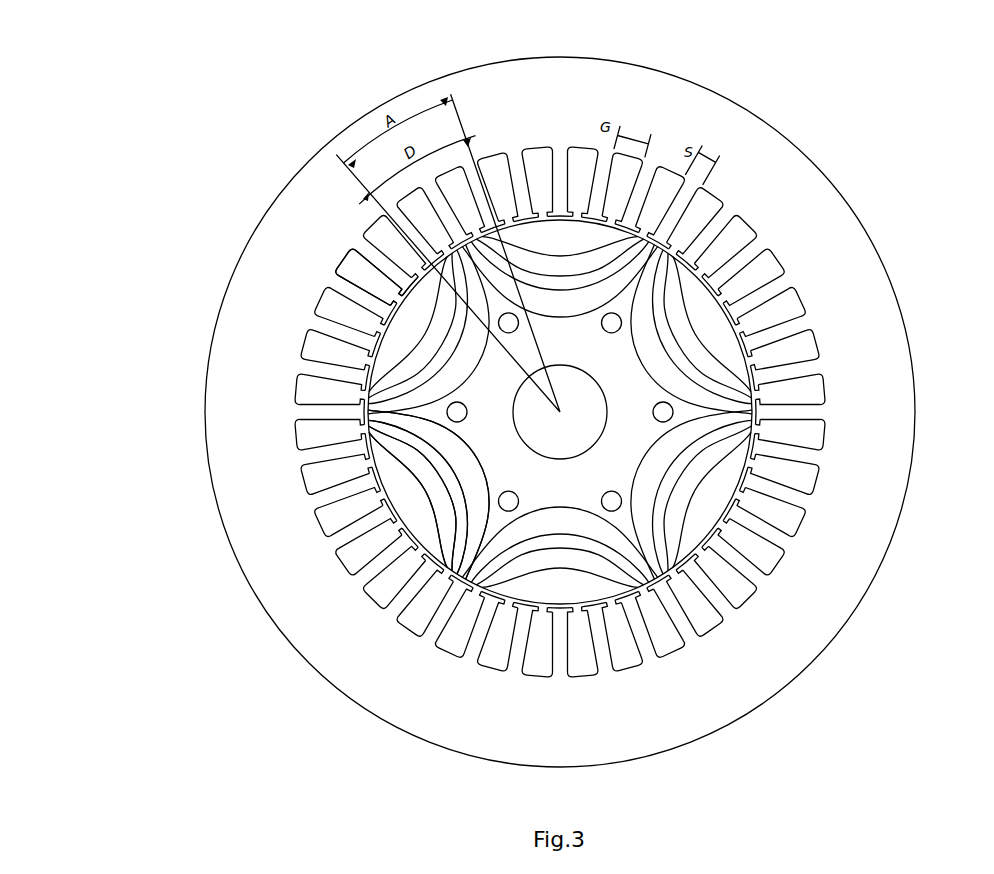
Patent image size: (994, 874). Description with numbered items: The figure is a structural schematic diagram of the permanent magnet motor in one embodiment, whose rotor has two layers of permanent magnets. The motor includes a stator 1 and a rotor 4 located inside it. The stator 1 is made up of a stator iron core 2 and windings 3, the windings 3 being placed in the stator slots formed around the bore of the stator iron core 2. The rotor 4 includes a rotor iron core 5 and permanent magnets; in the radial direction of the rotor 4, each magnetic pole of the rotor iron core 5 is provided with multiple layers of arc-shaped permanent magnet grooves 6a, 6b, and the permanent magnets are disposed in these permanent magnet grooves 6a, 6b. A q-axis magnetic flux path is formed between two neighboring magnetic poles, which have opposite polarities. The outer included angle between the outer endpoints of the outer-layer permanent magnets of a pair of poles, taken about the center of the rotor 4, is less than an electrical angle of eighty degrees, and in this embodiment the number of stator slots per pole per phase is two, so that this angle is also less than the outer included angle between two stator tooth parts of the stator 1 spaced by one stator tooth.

The stator 1 is at (387, 103).
The stator iron core 2 is at (407, 203).
The windings 3 is at (362, 275).
The rotor 4 is at (400, 352).
The rotor iron core 5 is at (440, 418).
The permanent magnet groove 6a is at (403, 463).
The permanent magnet groove 6b is at (460, 463).